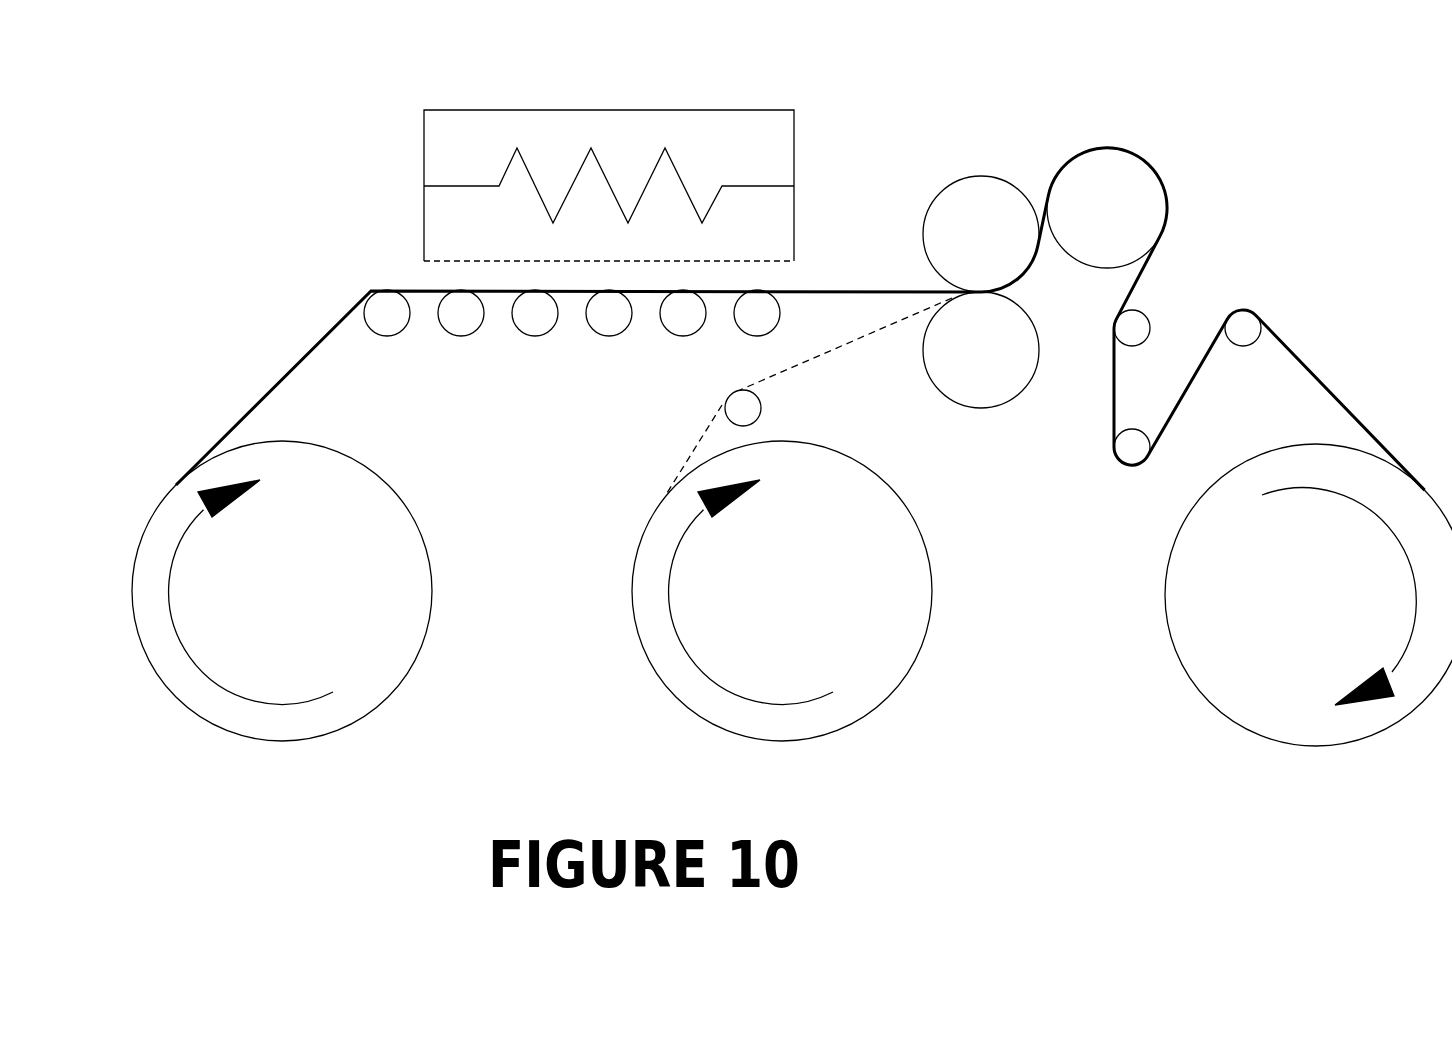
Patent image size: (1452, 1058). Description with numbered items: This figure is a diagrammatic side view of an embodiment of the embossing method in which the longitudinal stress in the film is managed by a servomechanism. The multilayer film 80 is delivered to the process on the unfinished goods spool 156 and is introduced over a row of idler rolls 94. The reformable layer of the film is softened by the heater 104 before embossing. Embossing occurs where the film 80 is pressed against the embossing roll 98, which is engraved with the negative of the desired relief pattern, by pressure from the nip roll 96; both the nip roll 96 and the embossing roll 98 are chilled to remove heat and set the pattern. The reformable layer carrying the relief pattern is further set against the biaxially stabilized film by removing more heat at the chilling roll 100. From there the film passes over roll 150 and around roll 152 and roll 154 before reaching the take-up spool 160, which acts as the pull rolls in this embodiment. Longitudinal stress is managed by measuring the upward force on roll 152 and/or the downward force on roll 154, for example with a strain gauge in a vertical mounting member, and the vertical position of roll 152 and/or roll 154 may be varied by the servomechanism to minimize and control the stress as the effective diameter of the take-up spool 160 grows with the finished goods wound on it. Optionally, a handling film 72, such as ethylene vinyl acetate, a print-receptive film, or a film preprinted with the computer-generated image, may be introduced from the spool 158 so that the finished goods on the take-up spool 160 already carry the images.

The multilayer film 80 is at (290, 370).
The heater 104 is at (591, 148).
The idler rolls 94 is at (757, 313).
The handling film 72 is at (725, 400).
The embossing roll 98 is at (981, 232).
The nip roll 96 is at (982, 353).
The chilling roll 100 is at (1107, 208).
The idler roller 150 is at (1133, 328).
The roll 152 is at (1132, 447).
The roll 154 is at (1243, 328).
The unfinished goods spool 156 is at (282, 591).
The spool 158 is at (782, 591).
The take-up spool 160 is at (1316, 595).